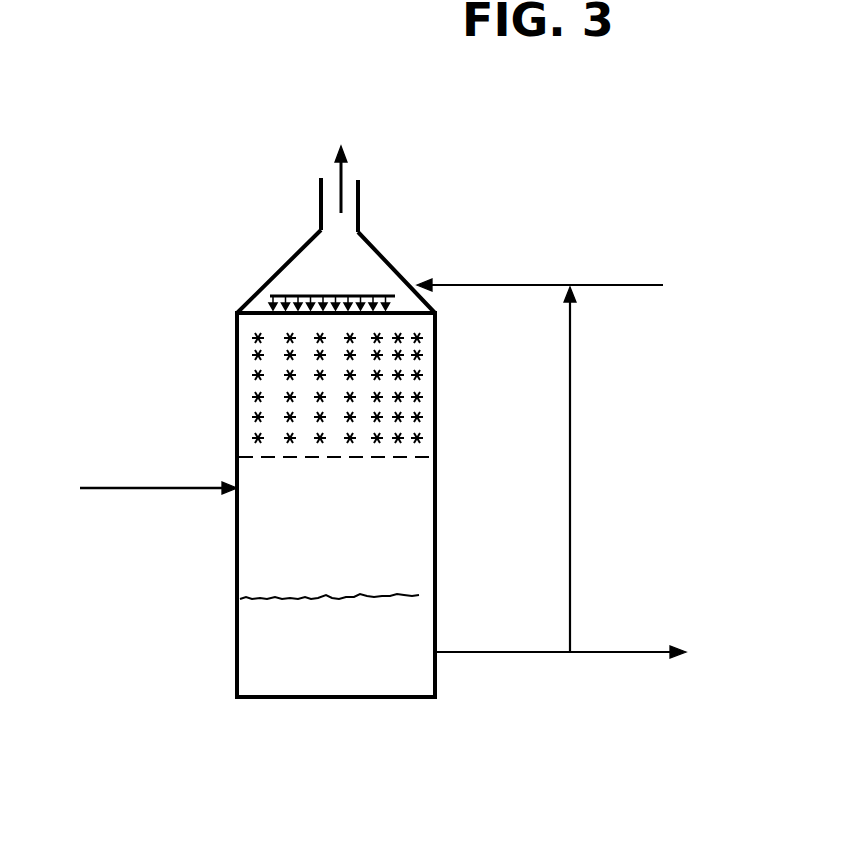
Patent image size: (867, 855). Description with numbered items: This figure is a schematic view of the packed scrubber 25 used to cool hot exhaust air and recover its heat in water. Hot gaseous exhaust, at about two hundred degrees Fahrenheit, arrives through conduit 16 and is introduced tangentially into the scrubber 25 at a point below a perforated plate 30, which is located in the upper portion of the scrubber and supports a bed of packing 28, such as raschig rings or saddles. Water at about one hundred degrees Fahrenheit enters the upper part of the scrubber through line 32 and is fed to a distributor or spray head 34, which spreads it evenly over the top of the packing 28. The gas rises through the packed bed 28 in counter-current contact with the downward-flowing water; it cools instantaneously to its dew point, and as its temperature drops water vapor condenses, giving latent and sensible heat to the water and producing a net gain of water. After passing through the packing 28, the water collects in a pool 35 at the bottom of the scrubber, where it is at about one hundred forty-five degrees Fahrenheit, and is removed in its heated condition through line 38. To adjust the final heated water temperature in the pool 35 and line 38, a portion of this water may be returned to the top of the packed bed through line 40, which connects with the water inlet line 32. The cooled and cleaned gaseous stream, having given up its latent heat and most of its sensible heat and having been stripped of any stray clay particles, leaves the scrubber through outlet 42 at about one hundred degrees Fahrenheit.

The conduit 16 is at (190, 488).
The packed scrubber 25 is at (435, 458).
The packing 28 is at (398, 375).
The perforated plate 30 is at (270, 460).
The line 32 is at (663, 285).
The distributor or spray head 34 is at (305, 296).
The pool 35 is at (390, 690).
The line 38 is at (653, 655).
The line 40 is at (570, 485).
The outlet 42 is at (358, 198).